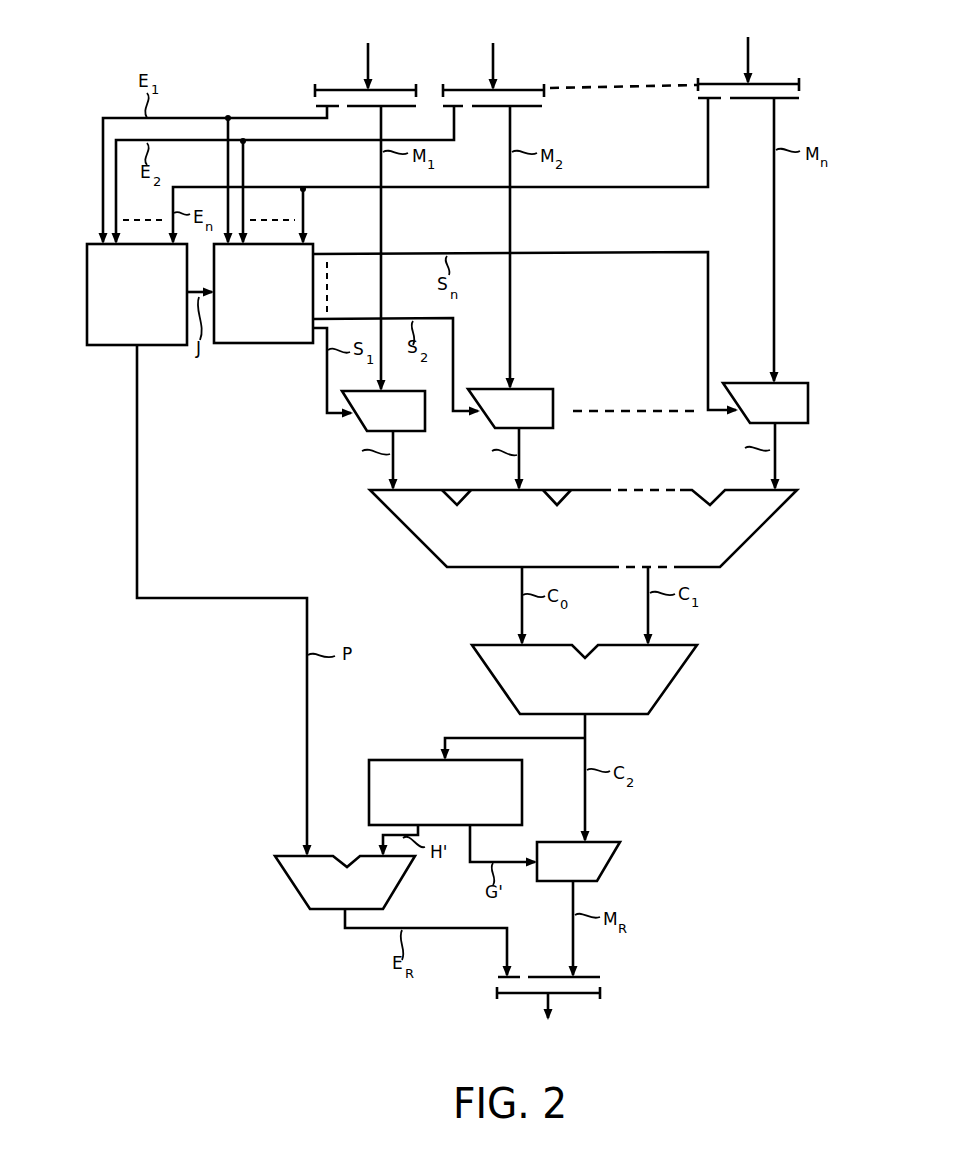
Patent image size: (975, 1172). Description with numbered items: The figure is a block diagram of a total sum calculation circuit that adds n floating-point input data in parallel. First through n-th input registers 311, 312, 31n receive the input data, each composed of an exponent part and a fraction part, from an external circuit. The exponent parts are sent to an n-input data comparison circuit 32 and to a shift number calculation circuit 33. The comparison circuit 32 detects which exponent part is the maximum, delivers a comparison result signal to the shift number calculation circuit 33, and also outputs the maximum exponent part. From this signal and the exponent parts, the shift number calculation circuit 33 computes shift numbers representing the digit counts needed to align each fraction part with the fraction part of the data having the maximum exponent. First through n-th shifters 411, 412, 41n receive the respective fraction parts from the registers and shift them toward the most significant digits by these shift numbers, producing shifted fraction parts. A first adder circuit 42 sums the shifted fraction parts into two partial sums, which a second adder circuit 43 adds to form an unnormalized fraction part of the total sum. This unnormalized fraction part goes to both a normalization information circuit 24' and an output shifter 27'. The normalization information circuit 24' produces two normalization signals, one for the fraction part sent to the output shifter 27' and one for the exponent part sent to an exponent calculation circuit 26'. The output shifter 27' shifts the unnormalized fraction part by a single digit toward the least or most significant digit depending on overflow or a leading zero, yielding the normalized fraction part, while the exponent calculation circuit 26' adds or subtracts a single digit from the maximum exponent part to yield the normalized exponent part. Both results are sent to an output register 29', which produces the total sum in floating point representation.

The first input register 311 is at (383, 84).
The second input register 312 is at (513, 84).
The n-th input register 31n is at (767, 78).
The n-input data comparison circuit 32 is at (108, 348).
The shift number calculation circuit 33 is at (270, 345).
The first shifter 411 is at (343, 423).
The second shifter 412 is at (535, 430).
The n-th shifter 41n is at (792, 425).
The first adder circuit 42 is at (768, 515).
The second adder circuit 43 is at (675, 675).
The normalization information circuit 24' is at (445, 770).
The exponent calculation circuit 26' is at (308, 920).
The output shifter 27' is at (648, 866).
The output register 29' is at (579, 1012).